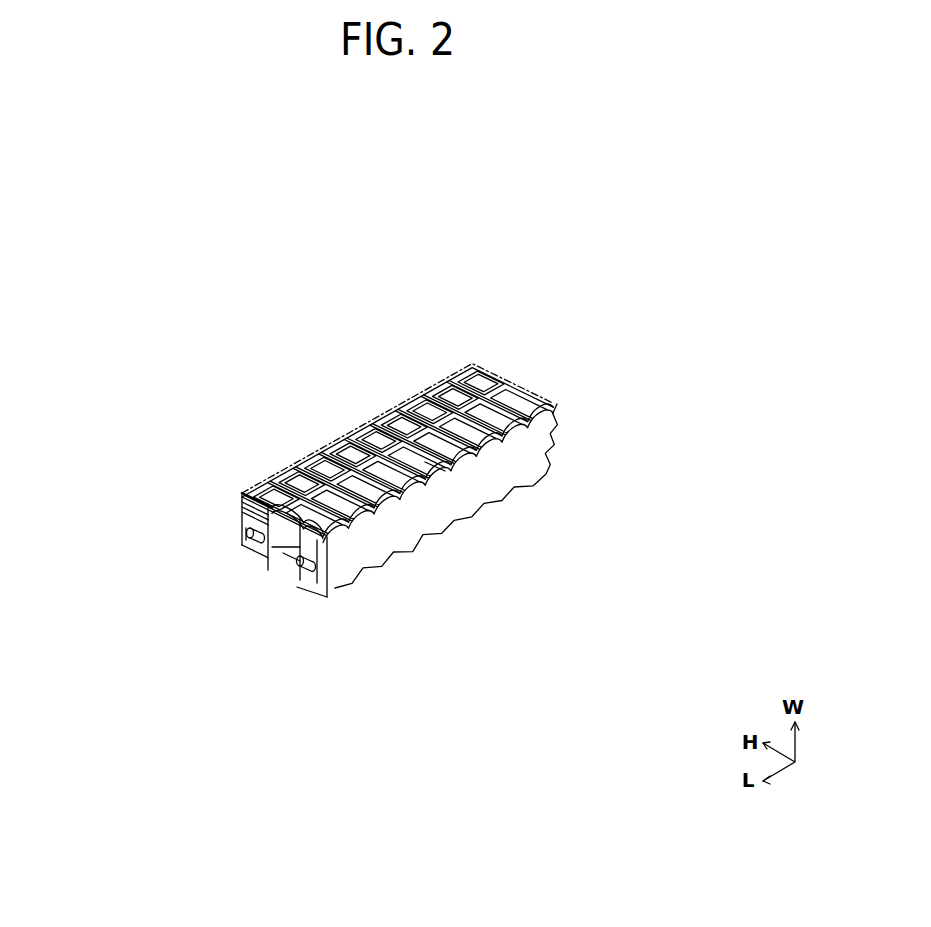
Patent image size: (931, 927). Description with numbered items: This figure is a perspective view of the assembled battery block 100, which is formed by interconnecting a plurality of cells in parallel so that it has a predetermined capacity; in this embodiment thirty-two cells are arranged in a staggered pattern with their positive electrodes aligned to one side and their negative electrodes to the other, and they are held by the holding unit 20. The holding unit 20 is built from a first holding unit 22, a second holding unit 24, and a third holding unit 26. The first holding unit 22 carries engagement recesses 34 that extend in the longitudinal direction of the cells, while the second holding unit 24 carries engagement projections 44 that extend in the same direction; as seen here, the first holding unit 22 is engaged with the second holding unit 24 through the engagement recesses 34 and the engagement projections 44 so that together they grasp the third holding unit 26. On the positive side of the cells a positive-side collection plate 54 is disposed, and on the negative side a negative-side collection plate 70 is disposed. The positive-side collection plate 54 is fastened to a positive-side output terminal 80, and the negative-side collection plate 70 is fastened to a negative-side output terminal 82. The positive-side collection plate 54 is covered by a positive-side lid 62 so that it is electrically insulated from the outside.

The battery block 100 is at (33, 796).
The holding unit 20 is at (485, 263).
The first holding unit 22 is at (518, 412).
The second holding unit 24 is at (448, 388).
The third holding unit 26 is at (490, 398).
The engagement recesses 34 is at (435, 465).
The engagement projections 44 is at (395, 445).
The positive-side collection plate 54 is at (300, 550).
The positive-side lid 62 is at (398, 548).
The negative-side collection plate 70 is at (248, 518).
The positive-side output terminal 80 is at (302, 562).
The negative-side output terminal 82 is at (255, 540).